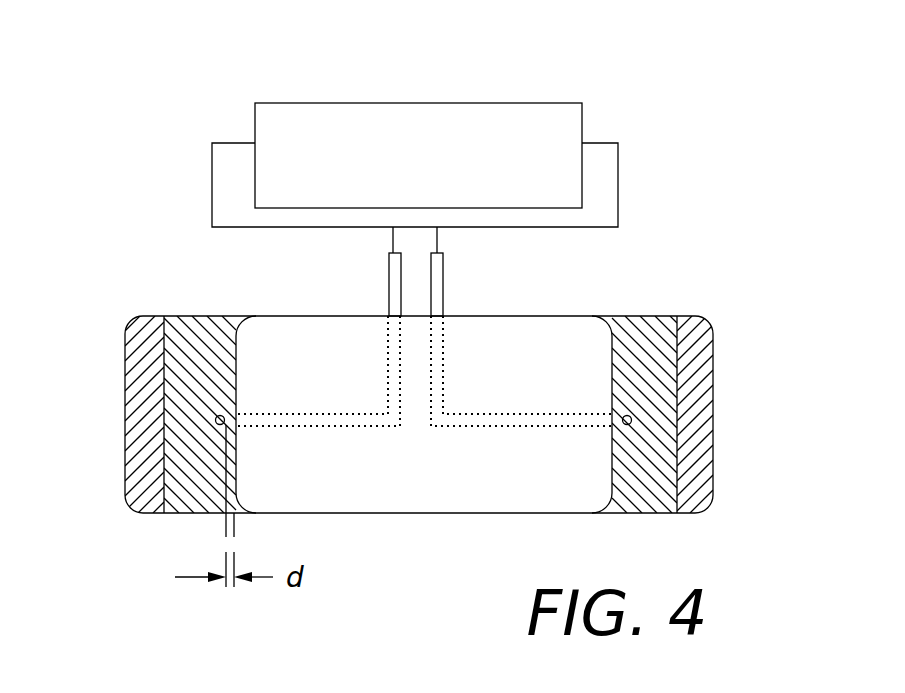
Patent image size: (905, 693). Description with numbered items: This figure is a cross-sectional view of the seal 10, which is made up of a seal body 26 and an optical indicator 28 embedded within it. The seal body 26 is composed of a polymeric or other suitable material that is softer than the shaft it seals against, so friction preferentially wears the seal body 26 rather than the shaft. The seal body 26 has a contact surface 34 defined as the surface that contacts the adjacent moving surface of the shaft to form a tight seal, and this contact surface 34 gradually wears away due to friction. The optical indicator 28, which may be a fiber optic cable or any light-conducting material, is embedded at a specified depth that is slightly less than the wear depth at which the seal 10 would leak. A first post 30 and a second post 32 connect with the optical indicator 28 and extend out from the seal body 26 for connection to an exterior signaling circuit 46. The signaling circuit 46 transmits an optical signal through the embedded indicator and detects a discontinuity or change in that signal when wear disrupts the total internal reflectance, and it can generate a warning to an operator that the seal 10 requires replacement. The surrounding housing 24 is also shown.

The seal 10 is at (730, 313).
The housing 24 is at (142, 373).
The seal body 26 is at (197, 330).
The optical indicator 28 is at (277, 413).
The first post 30 is at (389, 282).
The second post 32 is at (443, 282).
The contact surface 34 is at (237, 353).
The signaling circuit 46 is at (620, 79).